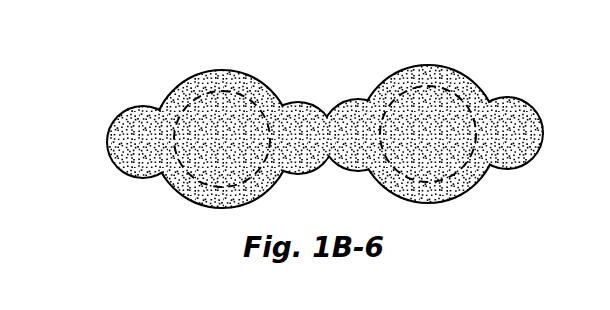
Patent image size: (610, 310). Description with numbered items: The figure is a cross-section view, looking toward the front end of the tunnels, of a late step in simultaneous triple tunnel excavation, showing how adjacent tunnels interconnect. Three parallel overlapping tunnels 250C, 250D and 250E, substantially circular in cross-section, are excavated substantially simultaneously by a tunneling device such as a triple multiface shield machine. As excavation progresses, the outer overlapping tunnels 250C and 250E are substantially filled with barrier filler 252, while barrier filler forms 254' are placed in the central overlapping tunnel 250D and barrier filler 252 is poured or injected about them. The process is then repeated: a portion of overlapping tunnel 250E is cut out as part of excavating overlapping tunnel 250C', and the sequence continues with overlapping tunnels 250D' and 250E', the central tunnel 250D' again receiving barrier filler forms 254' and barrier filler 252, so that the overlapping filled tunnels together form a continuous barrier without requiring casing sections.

The overlapping tunnel 250E' is at (103, 126).
The overlapping tunnel 250D' is at (210, 124).
The overlapping tunnel 250C' is at (298, 103).
The overlapping tunnel 250E is at (339, 163).
The overlapping tunnel 250D is at (425, 109).
The overlapping tunnel 250C is at (527, 104).
The barrier filler 252 is at (527, 160).
The barrier filler forms 254' is at (326, 167).